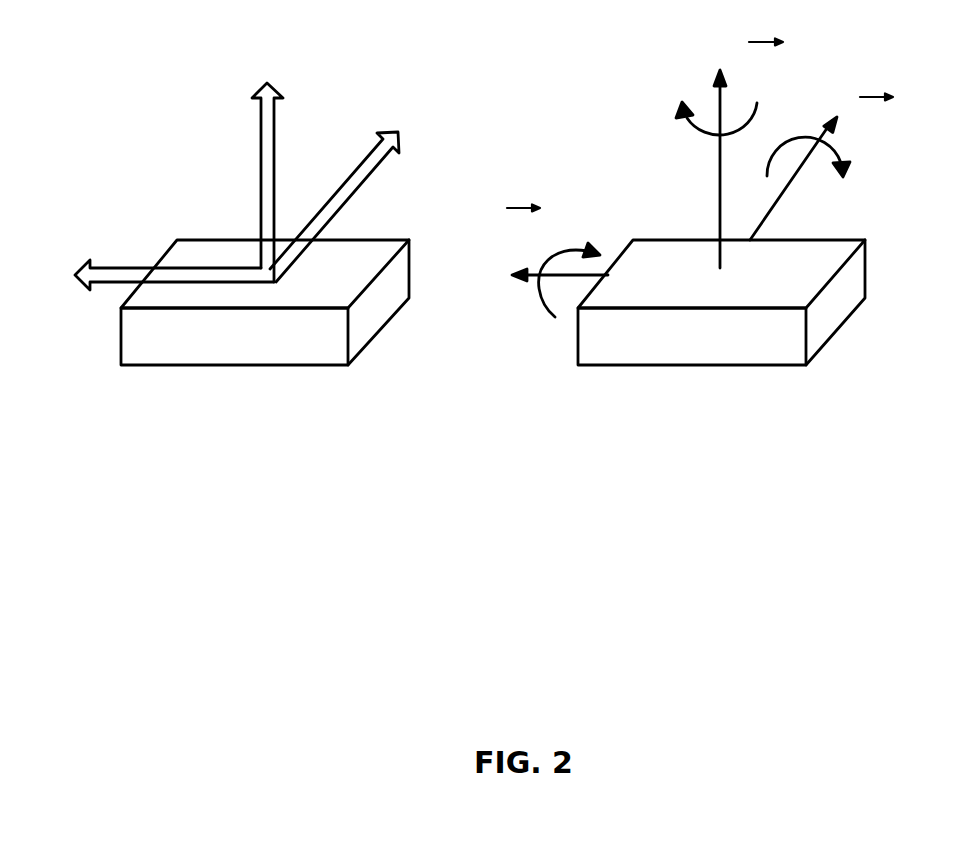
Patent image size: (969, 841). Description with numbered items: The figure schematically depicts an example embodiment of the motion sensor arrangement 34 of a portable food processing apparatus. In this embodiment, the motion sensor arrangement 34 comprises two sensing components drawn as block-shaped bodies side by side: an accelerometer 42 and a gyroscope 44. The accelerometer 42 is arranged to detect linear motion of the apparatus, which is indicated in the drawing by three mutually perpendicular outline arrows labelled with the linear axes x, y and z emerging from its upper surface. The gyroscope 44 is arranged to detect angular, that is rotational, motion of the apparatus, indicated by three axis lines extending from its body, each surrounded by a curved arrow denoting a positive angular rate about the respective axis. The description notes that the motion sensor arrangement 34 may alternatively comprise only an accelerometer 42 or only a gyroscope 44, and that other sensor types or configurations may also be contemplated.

The motion sensor arrangement 34 is at (472, 349).
The accelerometer 42 is at (232, 345).
The gyroscope 44 is at (693, 343).